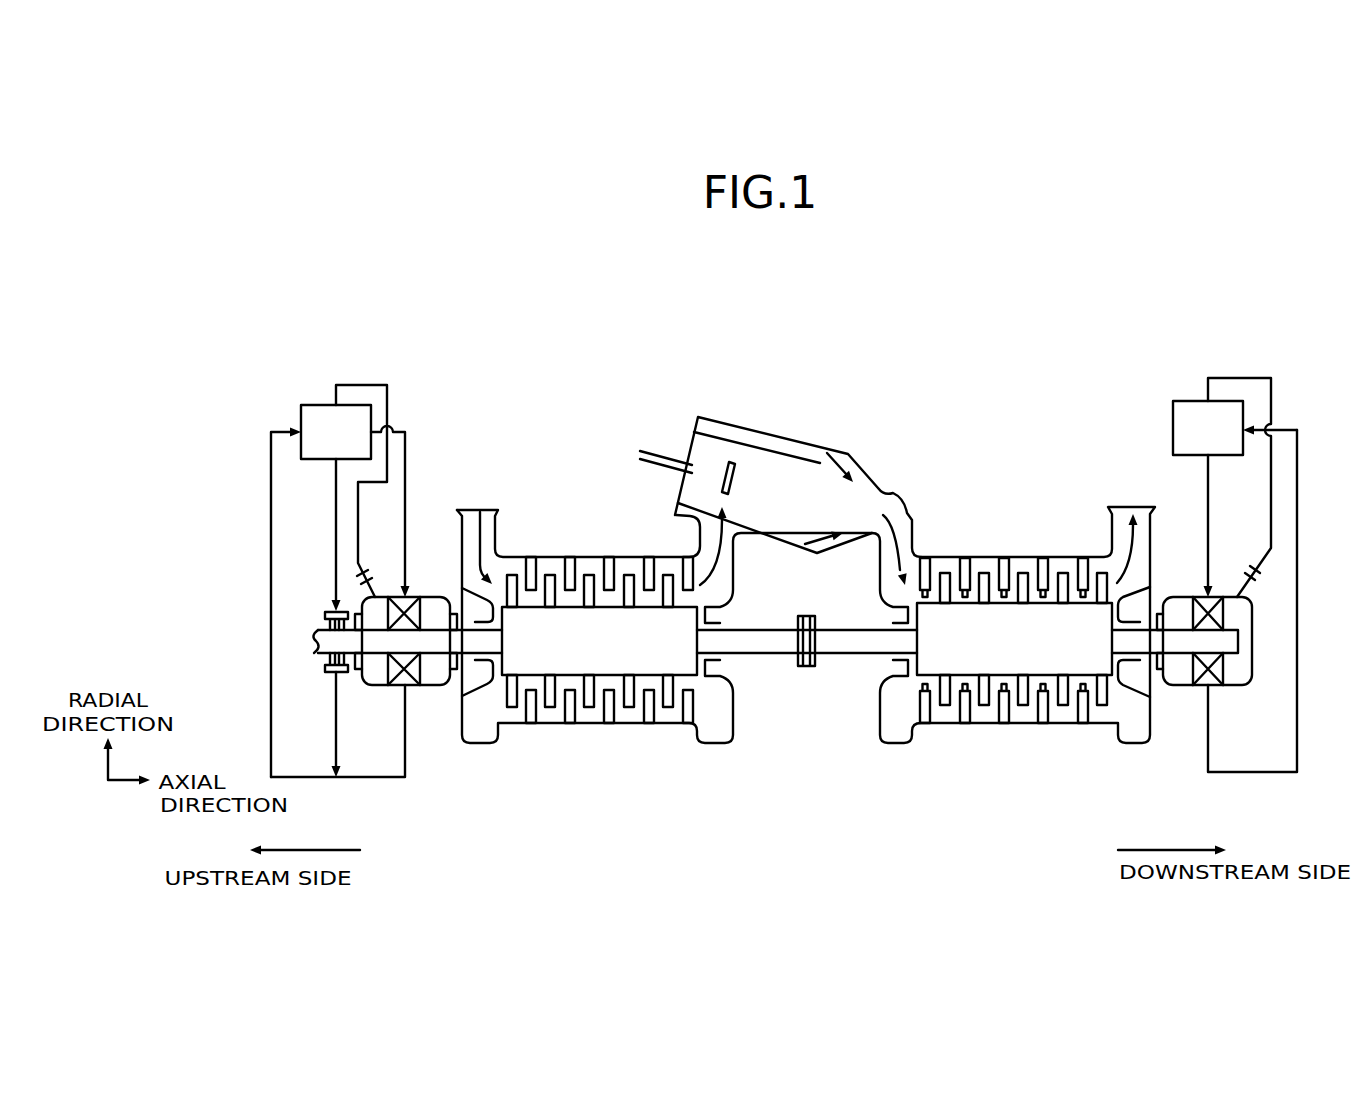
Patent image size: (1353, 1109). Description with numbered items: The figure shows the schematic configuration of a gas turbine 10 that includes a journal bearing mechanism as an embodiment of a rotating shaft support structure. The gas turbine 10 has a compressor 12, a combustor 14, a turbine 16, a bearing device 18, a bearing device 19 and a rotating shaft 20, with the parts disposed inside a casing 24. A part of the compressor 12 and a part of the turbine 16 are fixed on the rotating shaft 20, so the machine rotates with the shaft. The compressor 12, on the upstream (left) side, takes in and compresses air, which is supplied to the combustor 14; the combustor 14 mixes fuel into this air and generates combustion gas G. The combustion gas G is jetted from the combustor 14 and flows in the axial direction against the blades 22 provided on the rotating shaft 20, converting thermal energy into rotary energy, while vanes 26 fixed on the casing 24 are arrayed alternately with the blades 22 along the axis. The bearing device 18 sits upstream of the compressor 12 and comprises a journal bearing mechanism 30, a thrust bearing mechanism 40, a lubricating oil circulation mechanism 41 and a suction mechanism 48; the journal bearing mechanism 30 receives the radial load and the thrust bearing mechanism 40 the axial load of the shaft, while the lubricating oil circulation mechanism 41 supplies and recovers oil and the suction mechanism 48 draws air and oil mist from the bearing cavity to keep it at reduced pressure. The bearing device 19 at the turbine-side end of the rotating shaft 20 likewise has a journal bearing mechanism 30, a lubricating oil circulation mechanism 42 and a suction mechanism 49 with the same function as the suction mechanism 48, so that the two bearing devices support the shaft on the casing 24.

The gas turbine 10 is at (957, 330).
The compressor 12 is at (460, 762).
The combustor 14 is at (680, 410).
The turbine 16 is at (878, 762).
The bearing device 18 is at (428, 597).
The bearing device 19 is at (1180, 594).
The rotating shaft 20 is at (826, 660).
The blades 22 is at (1100, 570).
The casing 24 is at (1021, 556).
The vanes 26 is at (1045, 712).
The journal bearing mechanism 30 is at (410, 685).
The thrust bearing mechanism 40 is at (326, 611).
The lubricating oil circulation mechanism 41 is at (303, 404).
The lubricating oil circulation mechanism 42 is at (1182, 381).
The suction mechanism 48 is at (389, 400).
The suction mechanism 49 is at (1273, 402).
The combustion gas G is at (910, 520).